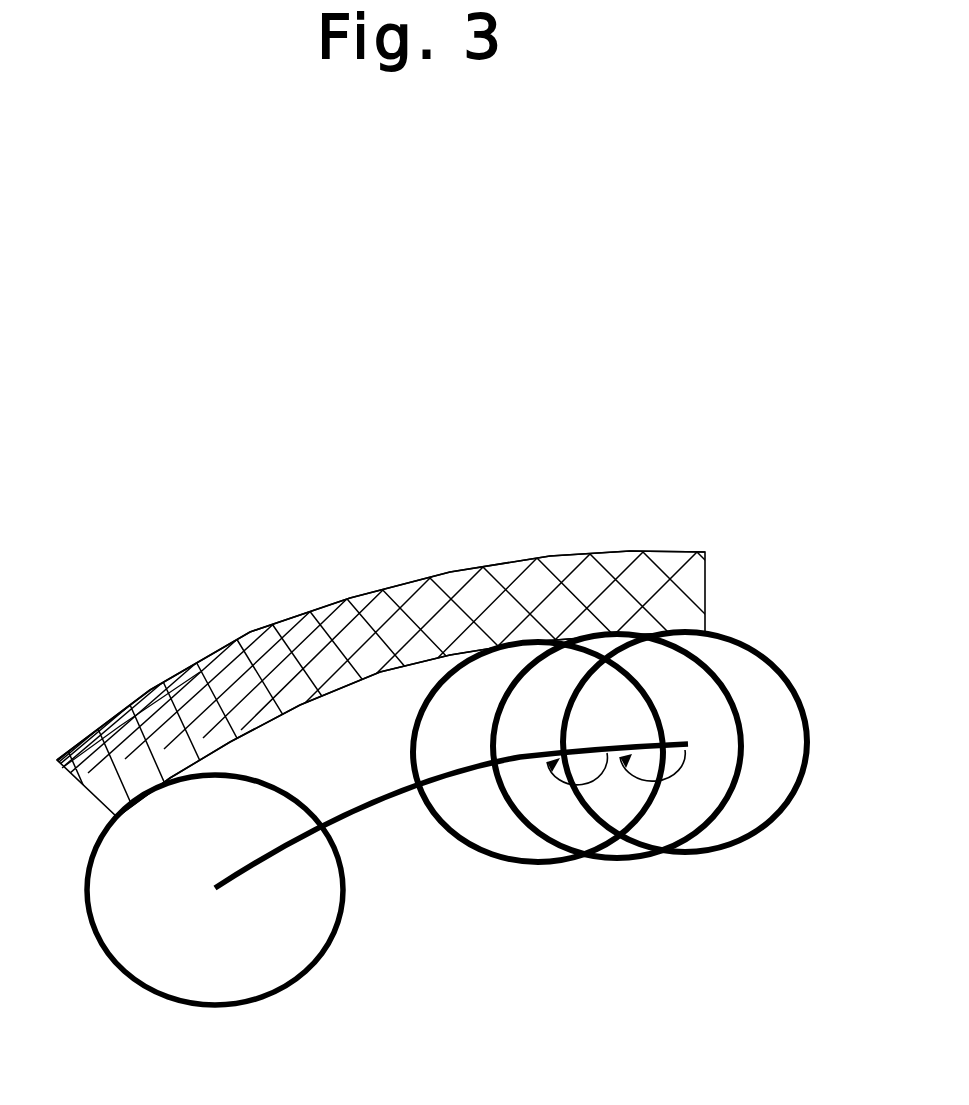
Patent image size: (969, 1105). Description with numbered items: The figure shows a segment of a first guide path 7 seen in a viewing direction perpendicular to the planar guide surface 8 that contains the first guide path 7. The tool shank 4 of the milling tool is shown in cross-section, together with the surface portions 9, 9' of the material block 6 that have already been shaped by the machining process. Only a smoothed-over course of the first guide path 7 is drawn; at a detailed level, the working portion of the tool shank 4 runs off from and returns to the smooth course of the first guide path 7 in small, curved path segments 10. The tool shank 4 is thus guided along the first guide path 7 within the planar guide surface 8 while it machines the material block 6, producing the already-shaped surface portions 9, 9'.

The tool shank 4 is at (730, 635).
The material block 6 is at (463, 572).
The first guide path 7 is at (376, 797).
The planar guide surface 8 is at (430, 948).
The surface portion 9 is at (411, 853).
The surface portion 9' is at (381, 584).
The curved path segment 10 is at (605, 767).